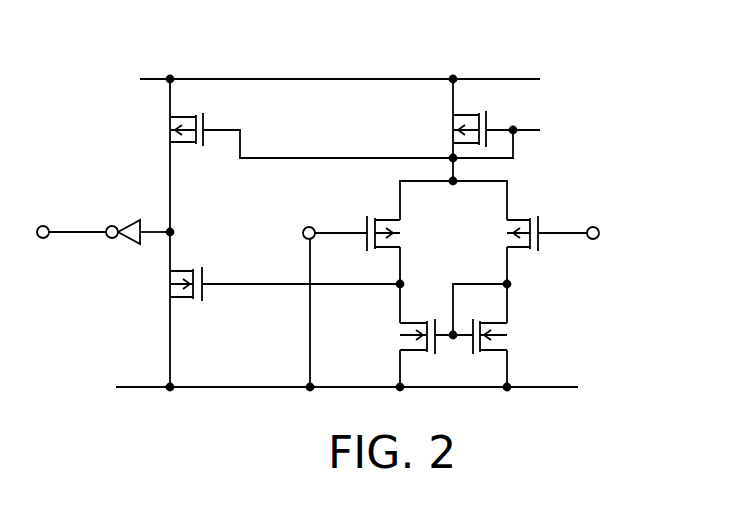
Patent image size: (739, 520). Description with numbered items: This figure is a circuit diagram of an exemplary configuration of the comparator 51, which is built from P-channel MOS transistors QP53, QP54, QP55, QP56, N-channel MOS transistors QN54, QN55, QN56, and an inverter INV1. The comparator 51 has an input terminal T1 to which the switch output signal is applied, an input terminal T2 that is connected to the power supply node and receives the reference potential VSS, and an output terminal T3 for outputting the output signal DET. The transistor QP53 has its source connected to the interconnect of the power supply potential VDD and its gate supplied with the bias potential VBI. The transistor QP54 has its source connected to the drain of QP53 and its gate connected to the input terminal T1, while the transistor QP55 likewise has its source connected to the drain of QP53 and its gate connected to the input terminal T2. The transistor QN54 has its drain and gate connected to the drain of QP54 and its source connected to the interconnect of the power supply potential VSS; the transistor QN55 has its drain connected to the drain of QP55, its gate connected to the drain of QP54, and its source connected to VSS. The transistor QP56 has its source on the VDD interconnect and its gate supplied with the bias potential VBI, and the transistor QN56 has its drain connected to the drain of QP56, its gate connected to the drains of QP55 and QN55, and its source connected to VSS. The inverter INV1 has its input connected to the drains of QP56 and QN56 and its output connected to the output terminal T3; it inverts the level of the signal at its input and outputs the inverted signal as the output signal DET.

The comparator 51 is at (463, 27).
The P-channel MOS transistor QP56 is at (306, 135).
The P-channel MOS transistor QP53 is at (437, 130).
The P-channel MOS transistor QP55 is at (368, 222).
The P-channel MOS transistor QP54 is at (540, 222).
The N-channel MOS transistor QN56 is at (249, 284).
The N-channel MOS transistor QN55 is at (405, 336).
The N-channel MOS transistor QN54 is at (525, 336).
The inverter INV1 is at (138, 244).
The input terminal T1 is at (586, 234).
The input terminal T2 is at (319, 304).
The output terminal T3 is at (55, 233).
The output signal DET is at (82, 217).
The power supply potential VDD is at (366, 81).
The power supply potential VSS is at (372, 388).
The bias potential VBI is at (534, 131).